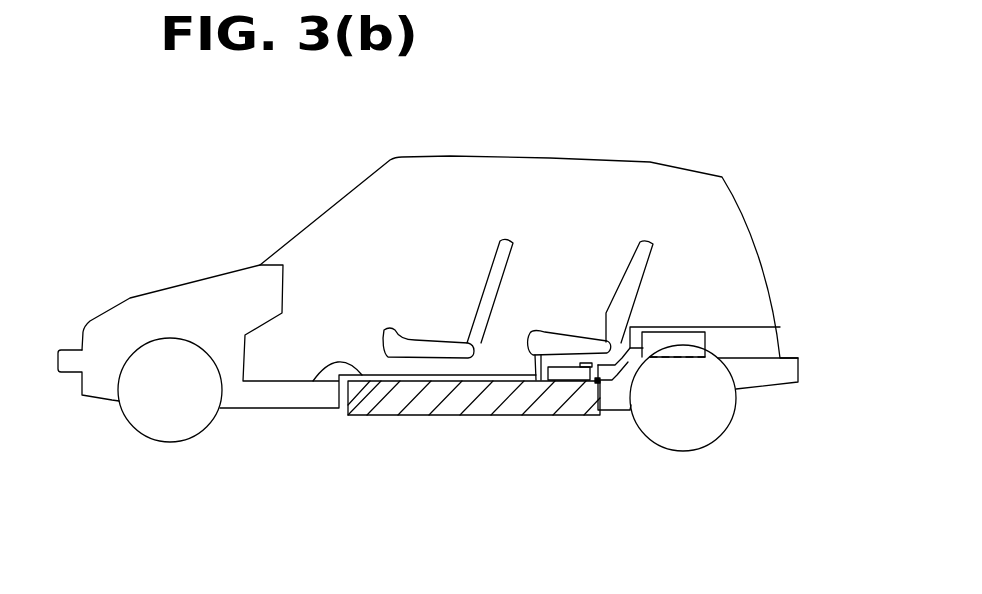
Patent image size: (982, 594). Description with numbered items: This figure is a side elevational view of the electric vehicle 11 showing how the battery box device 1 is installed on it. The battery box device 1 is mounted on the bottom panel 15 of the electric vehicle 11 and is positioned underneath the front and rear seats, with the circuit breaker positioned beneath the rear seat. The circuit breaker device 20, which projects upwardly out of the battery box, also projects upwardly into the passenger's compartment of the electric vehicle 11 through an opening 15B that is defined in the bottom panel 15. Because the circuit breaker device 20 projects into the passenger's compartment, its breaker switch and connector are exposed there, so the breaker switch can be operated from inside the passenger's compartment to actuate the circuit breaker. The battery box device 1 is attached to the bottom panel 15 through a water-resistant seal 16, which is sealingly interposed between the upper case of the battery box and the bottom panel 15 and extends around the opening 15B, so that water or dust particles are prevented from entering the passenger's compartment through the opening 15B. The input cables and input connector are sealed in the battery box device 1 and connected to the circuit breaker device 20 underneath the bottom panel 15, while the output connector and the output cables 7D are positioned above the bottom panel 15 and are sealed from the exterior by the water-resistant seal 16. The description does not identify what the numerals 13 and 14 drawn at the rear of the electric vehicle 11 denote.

The battery box device 1 is at (372, 400).
The output cables 7D is at (628, 327).
The electric vehicle 11 is at (482, 151).
The rear floor portion 13 is at (760, 342).
The fuel tank 14 is at (684, 332).
The bottom panel 15 is at (313, 380).
The opening 15B is at (540, 380).
The water-resistant seal 16 is at (540, 380).
The circuit breaker device 20 is at (567, 377).